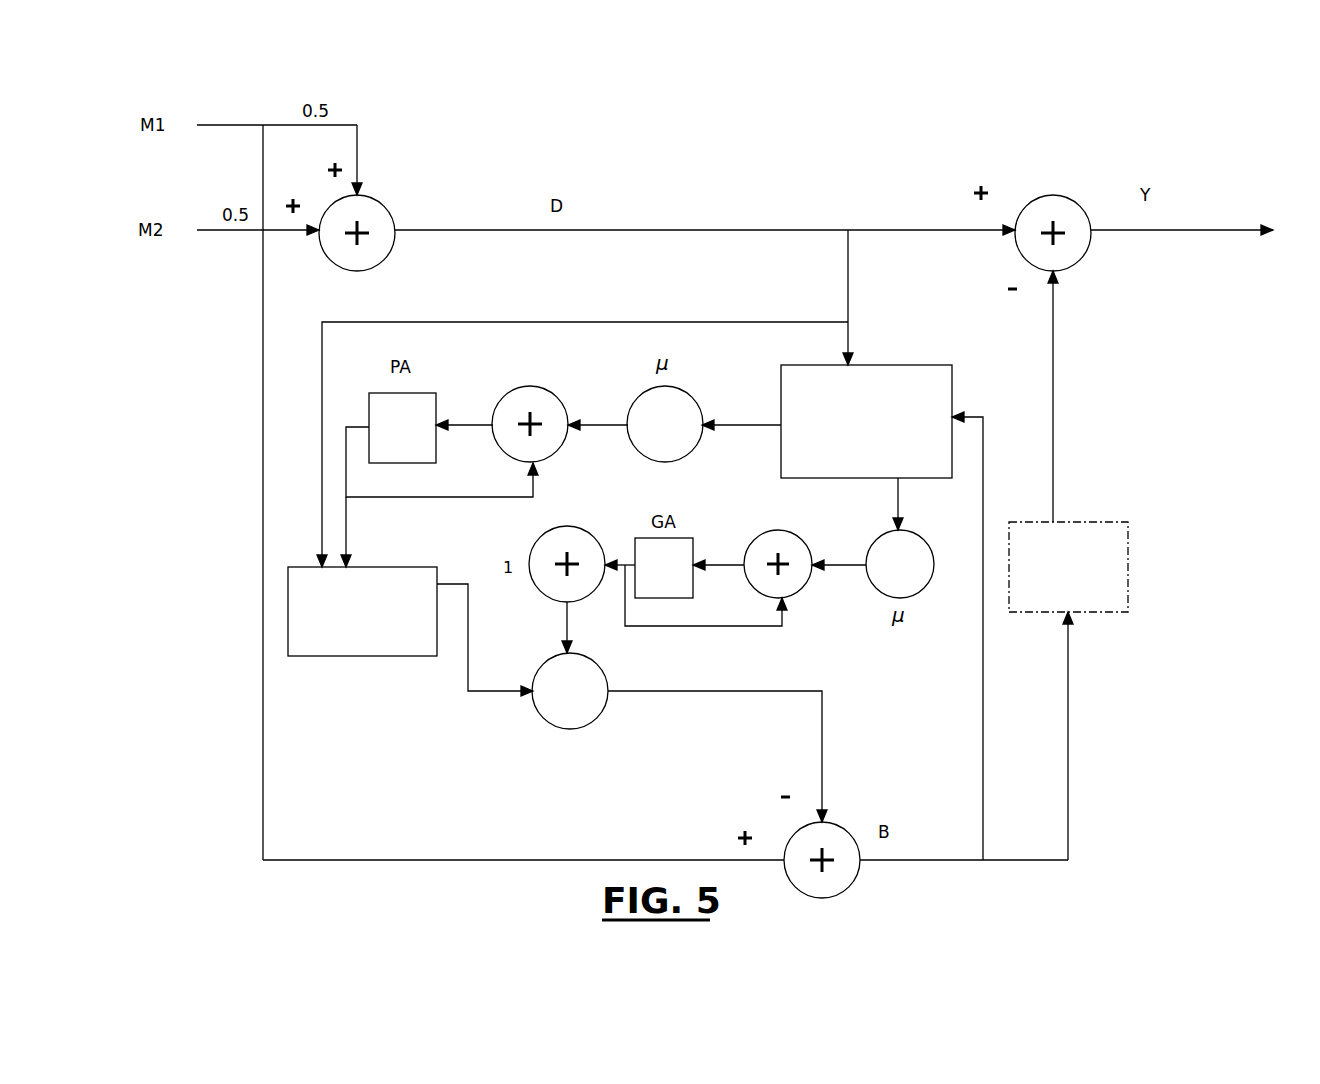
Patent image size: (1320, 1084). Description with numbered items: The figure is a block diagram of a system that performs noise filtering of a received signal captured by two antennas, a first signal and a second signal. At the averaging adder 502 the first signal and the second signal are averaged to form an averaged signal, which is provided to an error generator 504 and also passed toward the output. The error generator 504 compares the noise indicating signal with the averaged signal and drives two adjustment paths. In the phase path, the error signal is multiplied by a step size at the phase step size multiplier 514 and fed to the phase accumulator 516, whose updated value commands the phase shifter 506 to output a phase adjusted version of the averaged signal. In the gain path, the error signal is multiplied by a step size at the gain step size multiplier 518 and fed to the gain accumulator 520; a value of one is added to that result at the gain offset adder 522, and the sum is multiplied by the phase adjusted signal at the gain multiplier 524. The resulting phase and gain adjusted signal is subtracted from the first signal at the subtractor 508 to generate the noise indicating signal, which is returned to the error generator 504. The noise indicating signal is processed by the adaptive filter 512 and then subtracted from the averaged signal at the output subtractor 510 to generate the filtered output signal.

The averaging adder 502 is at (385, 205).
The error generator 504 is at (866, 421).
The phase shifter 506 is at (362, 611).
The subtractor 508 is at (840, 828).
The output subtractor 510 is at (1078, 207).
The adaptive filter 512 is at (1068, 567).
The phase step size multiplier 514 is at (690, 395).
The phase accumulator 516 is at (432, 398).
The gain step size multiplier 518 is at (880, 596).
The gain accumulator 520 is at (685, 540).
The gain offset adder 522 is at (595, 537).
The gain multiplier 524 is at (600, 687).